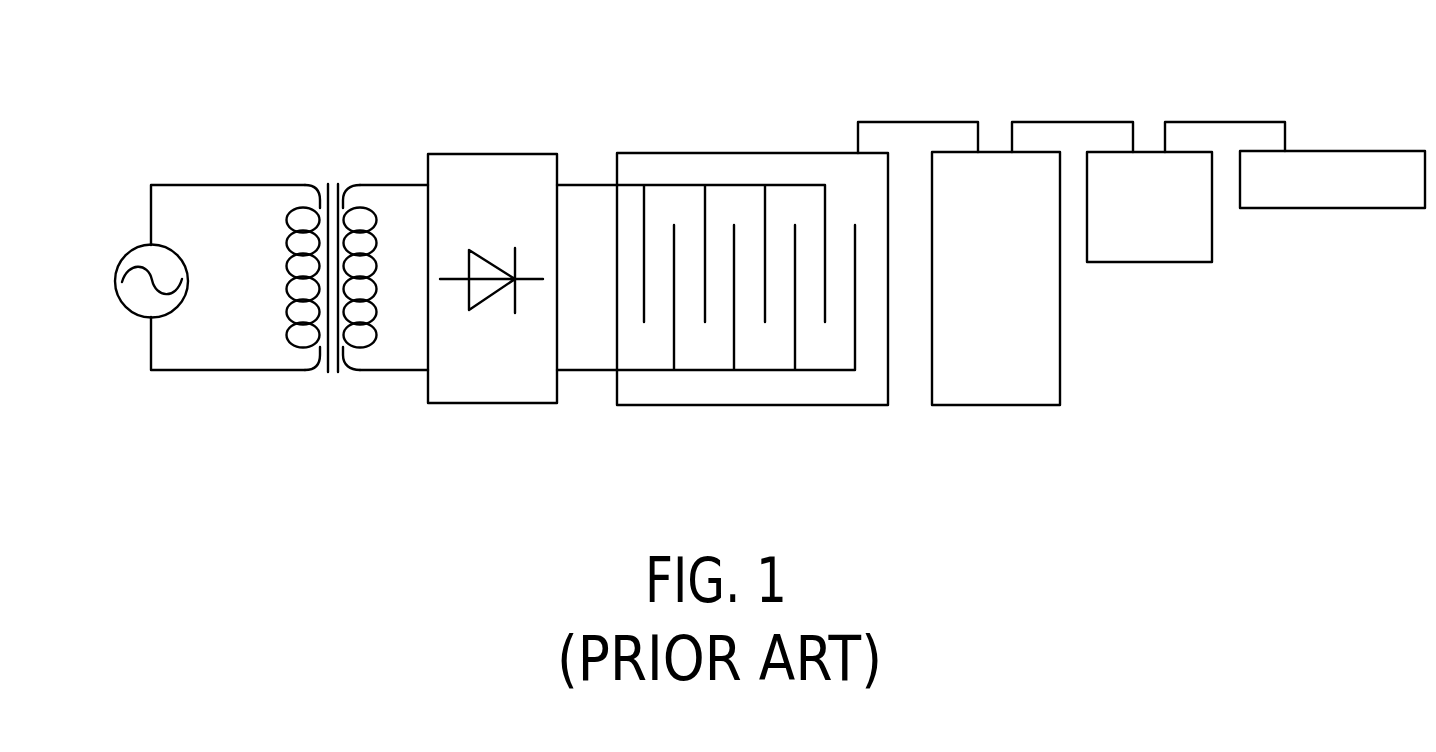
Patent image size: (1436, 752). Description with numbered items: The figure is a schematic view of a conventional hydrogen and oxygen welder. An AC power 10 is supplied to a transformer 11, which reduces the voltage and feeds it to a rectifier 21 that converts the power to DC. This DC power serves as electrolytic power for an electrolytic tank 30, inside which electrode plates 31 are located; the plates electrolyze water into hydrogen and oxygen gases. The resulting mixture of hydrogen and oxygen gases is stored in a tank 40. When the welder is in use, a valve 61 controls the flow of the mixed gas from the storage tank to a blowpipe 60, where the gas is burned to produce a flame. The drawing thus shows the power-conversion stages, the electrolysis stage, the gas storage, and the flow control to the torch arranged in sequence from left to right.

The AC power 10 is at (130, 247).
The transformer 11 is at (332, 183).
The rectifier 21 is at (480, 152).
The electrolytic tank 30 is at (752, 292).
The electrode plates 31 is at (674, 352).
The tank 40 is at (992, 150).
The valve 61 is at (1157, 150).
The blowpipe 60 is at (1357, 150).